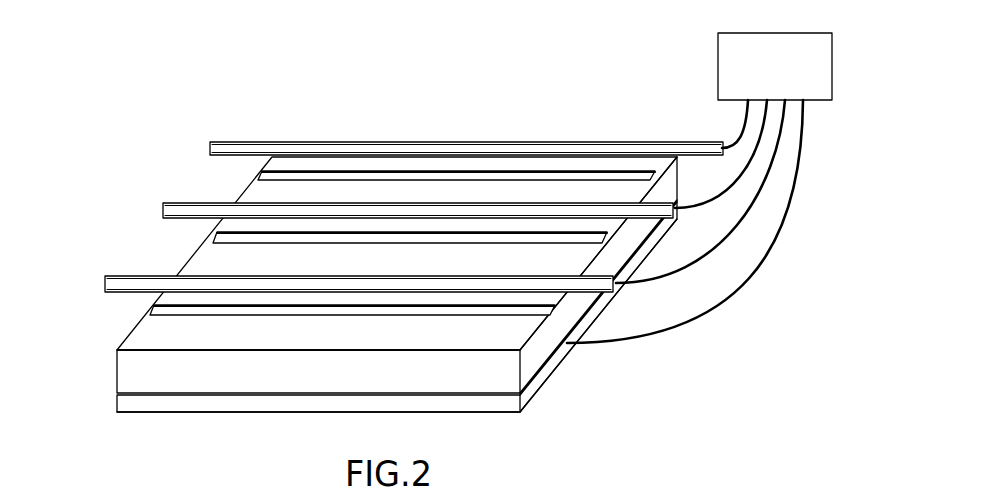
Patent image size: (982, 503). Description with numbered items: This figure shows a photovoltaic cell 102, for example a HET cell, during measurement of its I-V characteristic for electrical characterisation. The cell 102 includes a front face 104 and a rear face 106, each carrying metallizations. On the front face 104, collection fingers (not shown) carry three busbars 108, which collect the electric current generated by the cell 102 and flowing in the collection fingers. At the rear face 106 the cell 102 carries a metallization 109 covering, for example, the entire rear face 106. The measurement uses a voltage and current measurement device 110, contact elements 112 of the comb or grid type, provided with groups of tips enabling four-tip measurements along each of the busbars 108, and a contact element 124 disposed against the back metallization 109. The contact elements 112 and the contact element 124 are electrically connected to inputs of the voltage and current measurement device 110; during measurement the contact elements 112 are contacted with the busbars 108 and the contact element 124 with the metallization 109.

The photovoltaic cell 102 is at (533, 360).
The front face 104 is at (141, 338).
The rear face 106 is at (231, 395).
The busbars 108 is at (538, 173).
The metallization 109 is at (113, 394).
The voltage and current measurement device 110 is at (720, 63).
The contact elements 112 is at (203, 147).
The contact element 124 is at (495, 407).